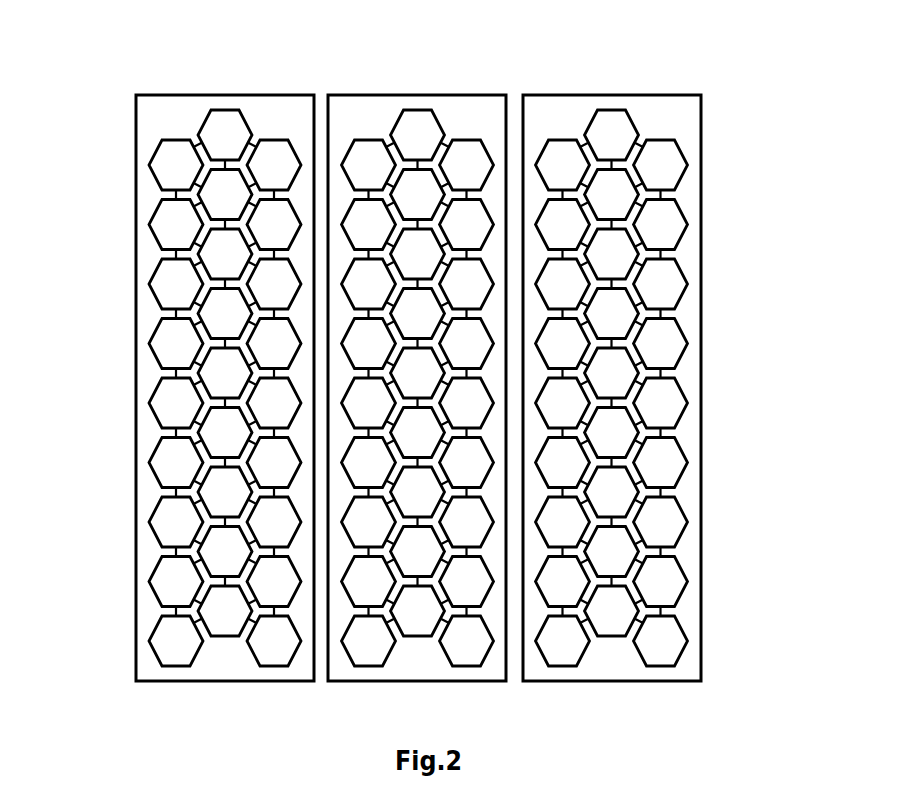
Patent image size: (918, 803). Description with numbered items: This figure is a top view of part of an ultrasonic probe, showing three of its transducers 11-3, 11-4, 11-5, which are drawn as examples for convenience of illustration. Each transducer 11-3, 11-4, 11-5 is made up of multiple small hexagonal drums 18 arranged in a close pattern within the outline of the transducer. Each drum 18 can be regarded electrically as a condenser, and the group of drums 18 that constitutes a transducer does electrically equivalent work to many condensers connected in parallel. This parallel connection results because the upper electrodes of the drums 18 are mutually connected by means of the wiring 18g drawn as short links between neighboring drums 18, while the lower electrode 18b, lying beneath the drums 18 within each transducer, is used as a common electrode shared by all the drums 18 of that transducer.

The transducer 11-3 is at (225, 389).
The transducer 11-4 is at (408, 94).
The transducer 11-5 is at (615, 94).
The hexagonal drum 18 is at (163, 162).
The wiring 18g is at (177, 611).
The lower electrode 18b is at (237, 658).